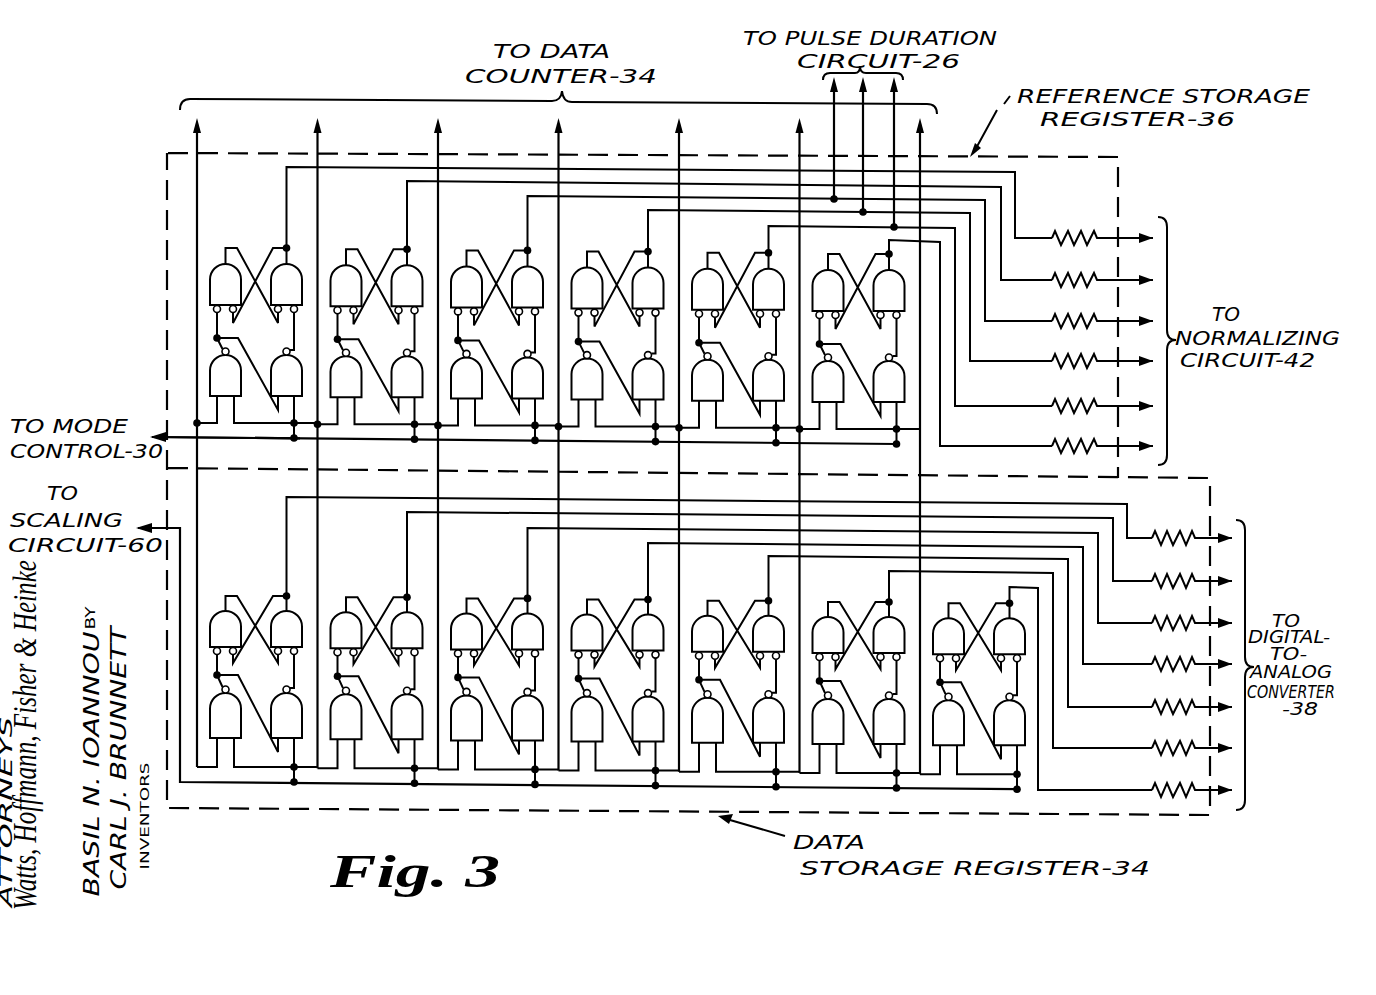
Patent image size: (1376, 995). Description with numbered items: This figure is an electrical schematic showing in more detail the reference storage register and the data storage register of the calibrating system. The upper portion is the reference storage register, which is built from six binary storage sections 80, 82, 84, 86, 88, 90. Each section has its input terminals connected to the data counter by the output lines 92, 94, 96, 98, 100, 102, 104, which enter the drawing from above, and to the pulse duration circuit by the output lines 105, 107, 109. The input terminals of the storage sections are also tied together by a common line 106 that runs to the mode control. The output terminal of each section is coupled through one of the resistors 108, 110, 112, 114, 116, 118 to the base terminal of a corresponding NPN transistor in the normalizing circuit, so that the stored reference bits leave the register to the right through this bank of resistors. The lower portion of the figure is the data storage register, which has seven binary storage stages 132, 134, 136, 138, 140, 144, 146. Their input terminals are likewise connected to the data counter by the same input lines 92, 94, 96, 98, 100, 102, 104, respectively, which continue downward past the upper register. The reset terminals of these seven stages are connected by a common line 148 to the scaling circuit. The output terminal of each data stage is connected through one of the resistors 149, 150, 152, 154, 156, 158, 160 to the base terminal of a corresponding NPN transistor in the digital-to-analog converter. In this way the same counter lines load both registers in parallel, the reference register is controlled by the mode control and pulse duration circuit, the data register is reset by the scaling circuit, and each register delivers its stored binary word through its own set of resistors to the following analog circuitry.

The binary storage section 80 is at (259, 242).
The binary storage section 82 is at (380, 243).
The binary storage section 84 is at (500, 245).
The binary storage section 86 is at (622, 247).
The binary storage section 88 is at (737, 259).
The binary storage section 90 is at (860, 270).
The output line 92 is at (205, 140).
The output line 94 is at (325, 140).
The output line 96 is at (445, 140).
The output line 98 is at (565, 140).
The output line 100 is at (685, 144).
The output line 102 is at (799, 146).
The output line 104 is at (925, 146).
The output line 105 is at (782, 135).
The common line 106 is at (221, 441).
The output line 107 is at (820, 146).
The resistor 108 is at (1052, 205).
The output line 109 is at (921, 154).
The resistor 110 is at (1056, 278).
The resistor 112 is at (1050, 296).
The resistor 114 is at (1050, 336).
The resistor 116 is at (1052, 380).
The resistor 118 is at (1052, 420).
The binary storage stage 132 is at (254, 594).
The binary storage stage 134 is at (376, 594).
The binary storage stage 136 is at (496, 595).
The binary storage stage 138 is at (616, 596).
The binary storage stage 140 is at (740, 594).
The binary storage stage 144 is at (855, 602).
The binary storage stage 146 is at (977, 610).
The common line 148 is at (263, 784).
The resistor 149 is at (1187, 533).
The resistor 150 is at (1180, 578).
The resistor 152 is at (1178, 621).
The resistor 154 is at (1167, 663).
The resistor 156 is at (1164, 705).
The resistor 158 is at (1167, 746).
The resistor 160 is at (1170, 788).